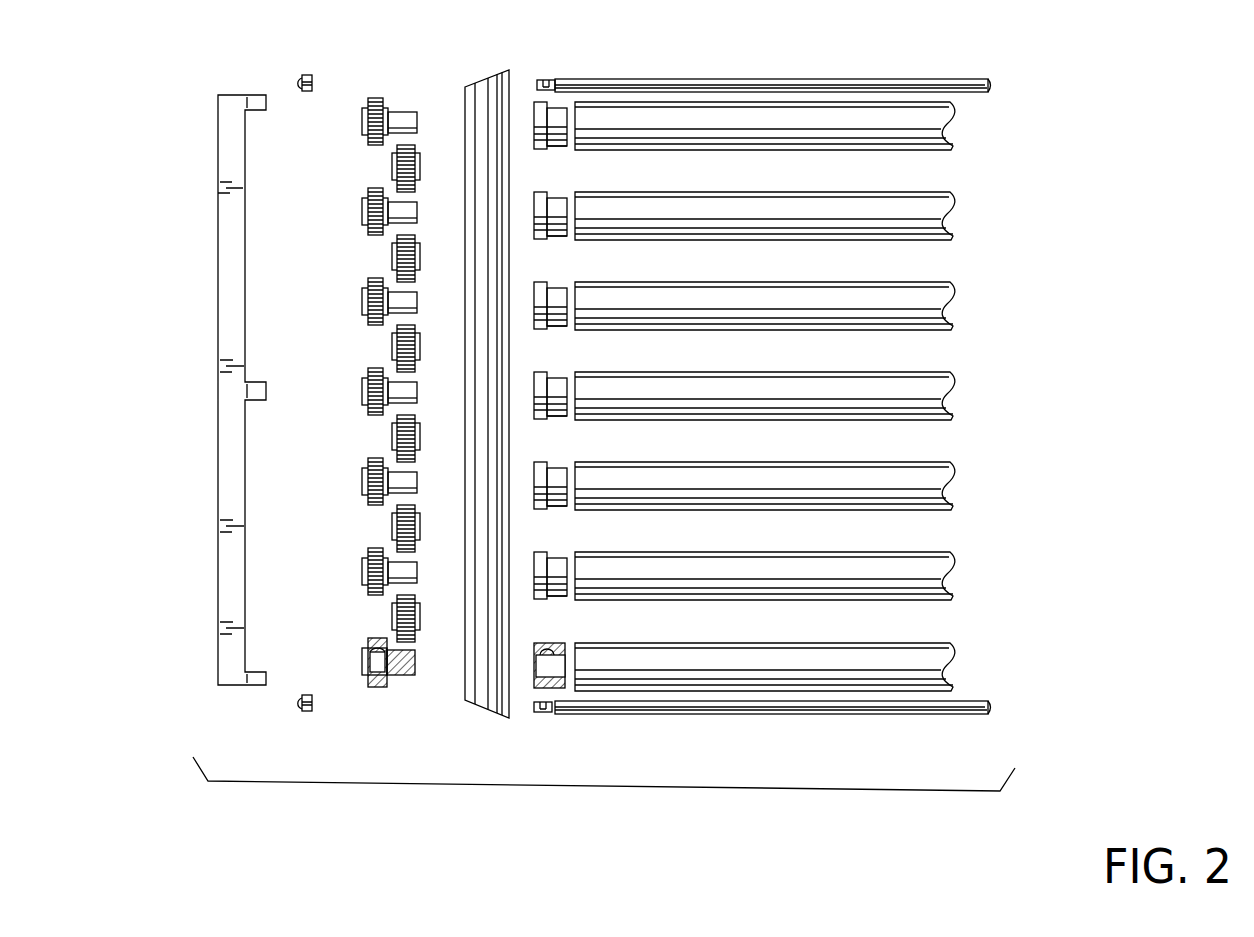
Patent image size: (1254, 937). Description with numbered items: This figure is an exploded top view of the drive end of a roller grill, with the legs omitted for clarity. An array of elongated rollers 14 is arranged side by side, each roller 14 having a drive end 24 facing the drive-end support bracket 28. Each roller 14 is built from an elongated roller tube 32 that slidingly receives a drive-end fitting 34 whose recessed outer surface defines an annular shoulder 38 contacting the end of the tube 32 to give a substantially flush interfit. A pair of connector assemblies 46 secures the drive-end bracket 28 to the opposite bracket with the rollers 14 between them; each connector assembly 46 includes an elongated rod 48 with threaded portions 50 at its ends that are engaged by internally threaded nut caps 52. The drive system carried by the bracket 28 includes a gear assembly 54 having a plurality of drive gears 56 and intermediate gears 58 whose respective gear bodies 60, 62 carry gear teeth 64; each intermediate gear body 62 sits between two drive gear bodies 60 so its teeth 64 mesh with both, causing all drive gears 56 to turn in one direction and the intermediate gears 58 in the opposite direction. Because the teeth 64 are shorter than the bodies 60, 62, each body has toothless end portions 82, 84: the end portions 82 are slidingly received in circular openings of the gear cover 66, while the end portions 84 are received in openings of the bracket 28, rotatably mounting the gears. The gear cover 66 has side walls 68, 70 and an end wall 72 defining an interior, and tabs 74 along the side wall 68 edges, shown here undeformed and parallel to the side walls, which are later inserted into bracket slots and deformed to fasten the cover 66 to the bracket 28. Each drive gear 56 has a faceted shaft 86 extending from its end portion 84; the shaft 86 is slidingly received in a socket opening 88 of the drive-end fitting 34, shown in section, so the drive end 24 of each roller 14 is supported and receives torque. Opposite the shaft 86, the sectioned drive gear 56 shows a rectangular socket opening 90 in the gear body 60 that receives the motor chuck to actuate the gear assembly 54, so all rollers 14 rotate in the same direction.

The roller 14 is at (972, 121).
The drive end 24 is at (578, 98).
The drive-end support bracket 28 is at (483, 91).
The roller tube 32 is at (935, 300).
The drive-end fitting 34 is at (539, 114).
The annular shoulder 38 is at (556, 195).
The connector assembly 46 is at (773, 393).
The elongated rod 48 is at (782, 82).
The threaded portion 50 is at (548, 78).
The nut cap 52 is at (310, 72).
The gear assembly 54 is at (374, 395).
The drive gear 56 is at (355, 429).
The intermediate gear 58 is at (395, 162).
The gear body 60 is at (362, 300).
The gear body 62 is at (395, 342).
The gear teeth 64 is at (372, 234).
The gear cover 66 is at (218, 94).
The side wall 68 is at (230, 233).
The side wall 70 is at (225, 688).
The end wall 72 is at (218, 378).
The tab 74 is at (260, 100).
The end portion 82 is at (362, 390).
The end portion 84 is at (417, 482).
The shaft 86 is at (417, 300).
The socket opening 88 is at (534, 661).
The socket opening 90 is at (362, 656).